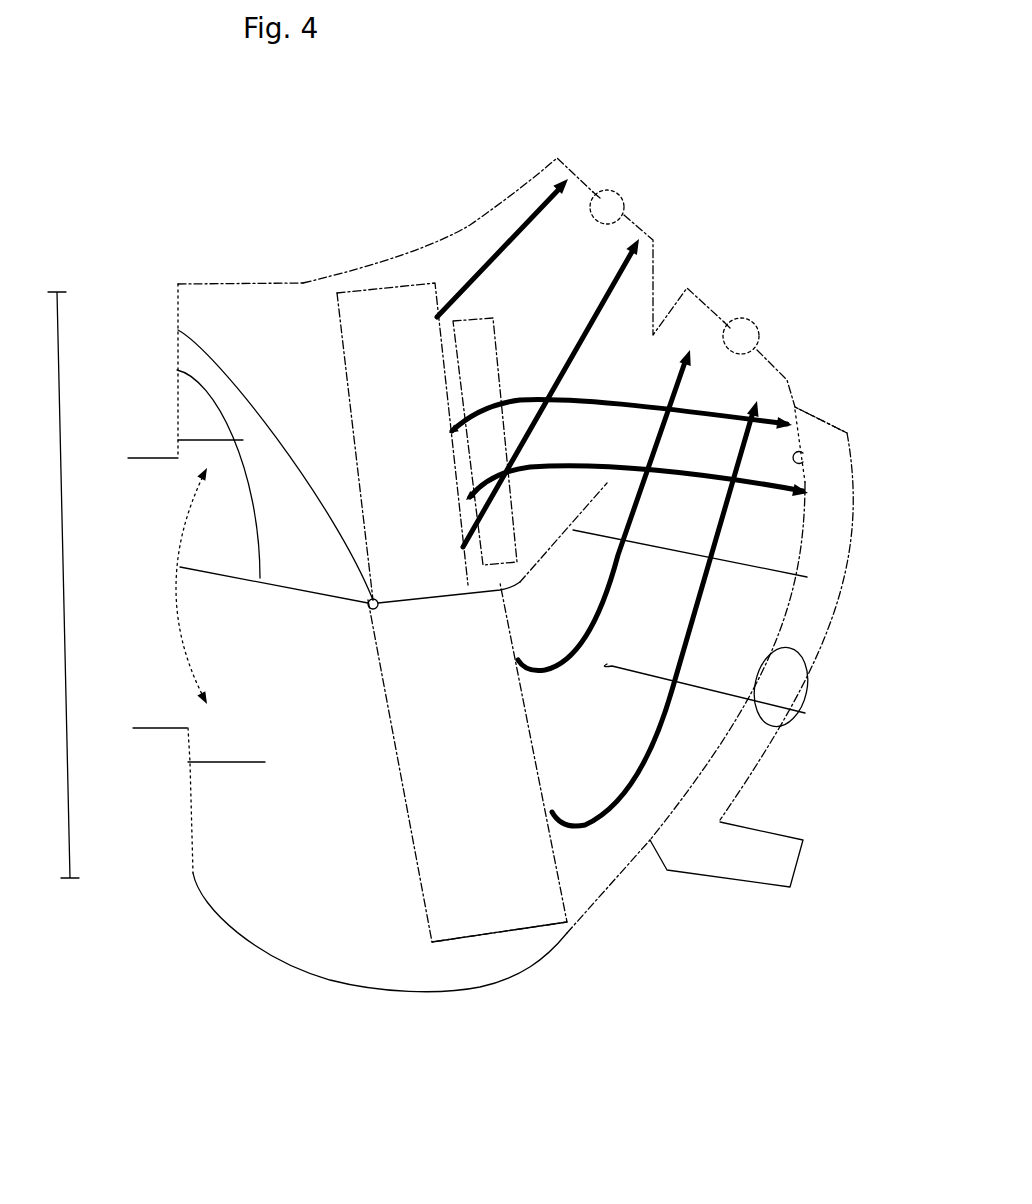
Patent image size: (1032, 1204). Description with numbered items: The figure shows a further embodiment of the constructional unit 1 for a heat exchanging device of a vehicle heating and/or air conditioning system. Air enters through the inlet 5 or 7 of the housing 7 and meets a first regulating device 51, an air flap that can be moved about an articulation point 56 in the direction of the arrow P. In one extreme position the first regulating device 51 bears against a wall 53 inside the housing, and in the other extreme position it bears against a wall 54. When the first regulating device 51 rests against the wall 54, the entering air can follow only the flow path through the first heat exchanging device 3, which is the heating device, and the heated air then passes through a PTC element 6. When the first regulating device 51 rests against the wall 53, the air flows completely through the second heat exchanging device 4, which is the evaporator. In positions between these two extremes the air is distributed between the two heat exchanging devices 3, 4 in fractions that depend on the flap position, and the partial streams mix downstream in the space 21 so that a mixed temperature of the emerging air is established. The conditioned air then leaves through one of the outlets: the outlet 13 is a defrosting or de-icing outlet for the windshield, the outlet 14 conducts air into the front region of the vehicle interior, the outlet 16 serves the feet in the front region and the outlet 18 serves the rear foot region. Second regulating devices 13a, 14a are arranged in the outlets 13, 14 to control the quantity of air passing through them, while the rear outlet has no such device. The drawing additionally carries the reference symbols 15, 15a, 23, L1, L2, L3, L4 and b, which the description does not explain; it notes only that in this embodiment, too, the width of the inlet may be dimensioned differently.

The optical sensor device 1 is at (416, 134).
The first heat exchanging device 3 is at (390, 323).
The second heat exchanging device 4 is at (462, 867).
The inlet region 5 is at (142, 615).
The PTC element 6 is at (487, 315).
The housing 7 is at (303, 283).
The defrosting outlet 13 is at (615, 203).
The second regulating device 13a is at (628, 213).
The outlet 14 is at (740, 325).
The second regulating device 14a is at (757, 350).
The third light receiving opening 15 is at (802, 450).
The third opening edge 15a is at (805, 480).
The outlet 16 is at (790, 673).
The outlet 18 is at (737, 840).
The space 21 is at (805, 713).
The wall 23 is at (807, 577).
The first regulating device 51 is at (177, 370).
The wall 53 is at (200, 440).
The wall 54 is at (217, 763).
The articulation point 56 is at (178, 330).
The light beam L1 is at (614, 306).
The light beam L2 is at (563, 526).
The light beam L3 is at (635, 455).
The light beam L4 is at (655, 613).
The arrow P is at (199, 586).
The width b is at (76, 585).